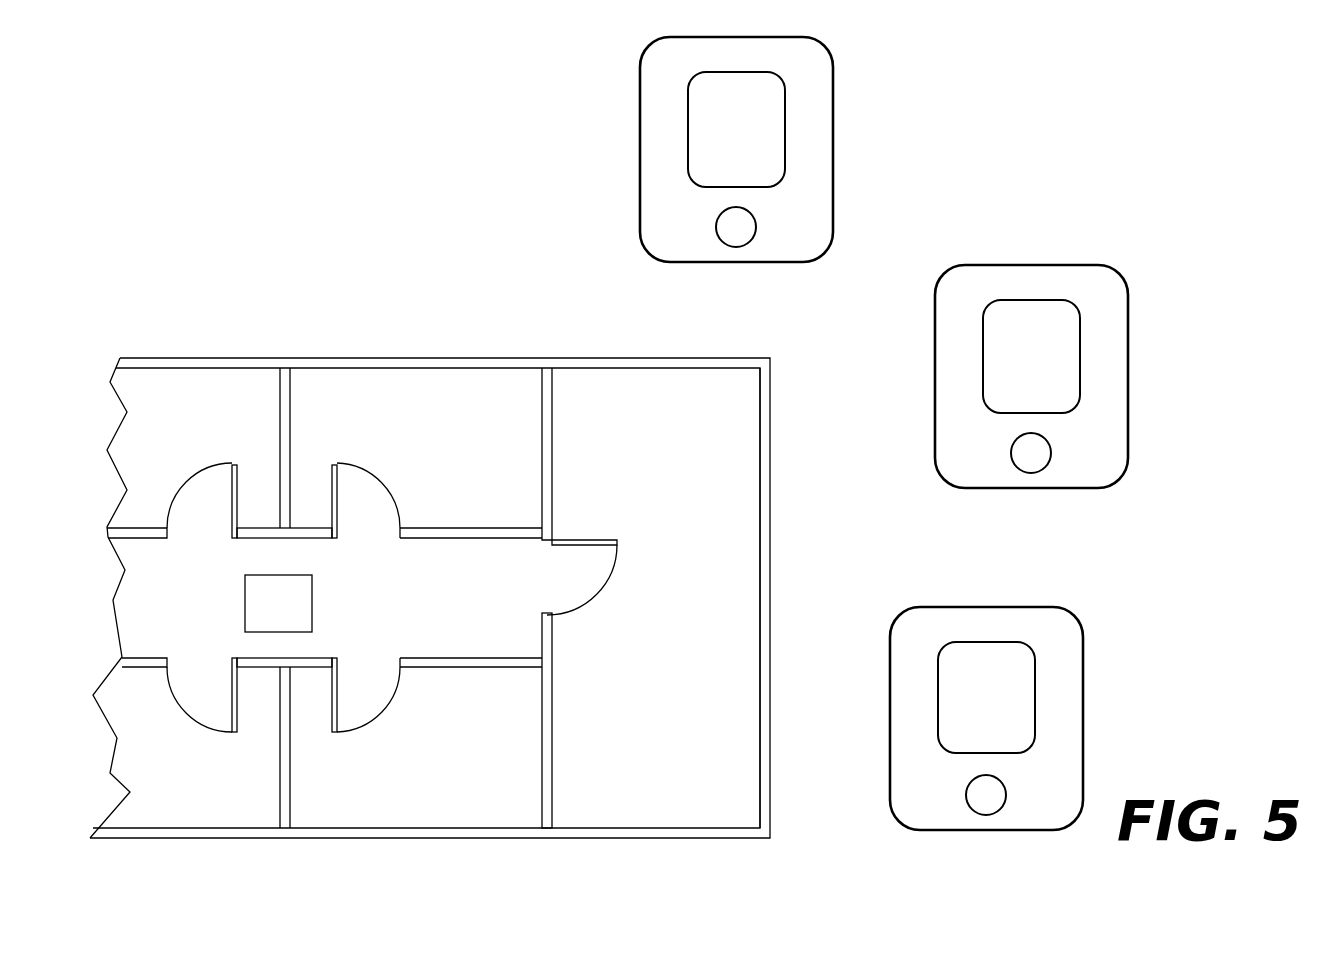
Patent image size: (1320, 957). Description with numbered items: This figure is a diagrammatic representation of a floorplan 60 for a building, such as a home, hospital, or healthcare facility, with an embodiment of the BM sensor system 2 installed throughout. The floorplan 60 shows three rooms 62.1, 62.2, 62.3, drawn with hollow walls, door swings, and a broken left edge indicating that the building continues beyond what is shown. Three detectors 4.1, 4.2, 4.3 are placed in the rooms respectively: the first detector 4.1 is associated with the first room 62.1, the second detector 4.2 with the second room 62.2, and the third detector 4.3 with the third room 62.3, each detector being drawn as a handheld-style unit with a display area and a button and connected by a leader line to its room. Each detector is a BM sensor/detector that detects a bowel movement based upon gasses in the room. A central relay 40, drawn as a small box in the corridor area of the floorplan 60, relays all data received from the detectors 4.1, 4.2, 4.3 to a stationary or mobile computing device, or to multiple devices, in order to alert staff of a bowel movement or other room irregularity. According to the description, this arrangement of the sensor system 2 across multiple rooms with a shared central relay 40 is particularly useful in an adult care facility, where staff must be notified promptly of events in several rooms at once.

The BM sensor system 2 is at (1072, 148).
The detector 4.1 is at (833, 128).
The detector 4.2 is at (1128, 355).
The detector 4.3 is at (1083, 695).
The floorplan 60 is at (294, 350).
The room 62.1 is at (640, 170).
The room 62.2 is at (935, 378).
The room 62.3 is at (890, 718).
The central relay 40 is at (298, 612).